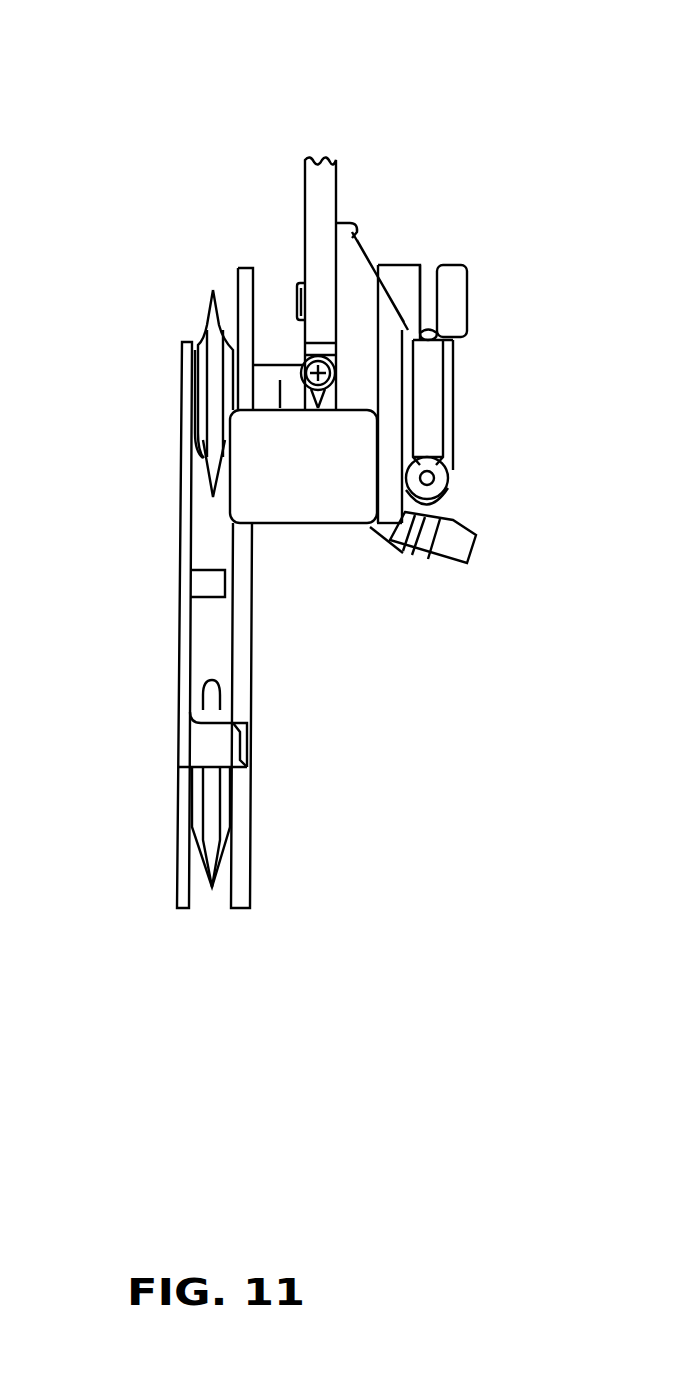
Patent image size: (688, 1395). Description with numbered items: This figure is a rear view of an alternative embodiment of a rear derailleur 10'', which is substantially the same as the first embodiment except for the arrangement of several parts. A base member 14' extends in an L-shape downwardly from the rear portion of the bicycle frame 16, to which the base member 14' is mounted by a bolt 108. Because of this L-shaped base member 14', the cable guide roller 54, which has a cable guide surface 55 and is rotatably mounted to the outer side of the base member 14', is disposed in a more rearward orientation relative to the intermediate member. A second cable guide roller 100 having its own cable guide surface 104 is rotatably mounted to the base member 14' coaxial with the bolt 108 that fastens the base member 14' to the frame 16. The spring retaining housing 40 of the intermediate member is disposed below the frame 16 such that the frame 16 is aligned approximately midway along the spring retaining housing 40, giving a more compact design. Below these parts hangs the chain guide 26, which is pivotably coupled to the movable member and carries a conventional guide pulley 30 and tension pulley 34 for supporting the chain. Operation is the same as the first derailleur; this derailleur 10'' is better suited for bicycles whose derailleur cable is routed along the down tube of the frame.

The rear derailleur 10'' is at (113, 70).
The base member 14' is at (378, 325).
The bicycle frame 16 is at (305, 180).
The chain guide 26 is at (155, 502).
The guide pulley 30 is at (207, 298).
The tension pulley 34 is at (212, 887).
The spring retaining housing 40 is at (307, 528).
The cable guide roller 54 is at (453, 403).
The cable guide surface 55 is at (432, 378).
The second cable guide roller 100 is at (467, 290).
The cable guide surface 104 is at (428, 280).
The bolt 108 is at (297, 300).